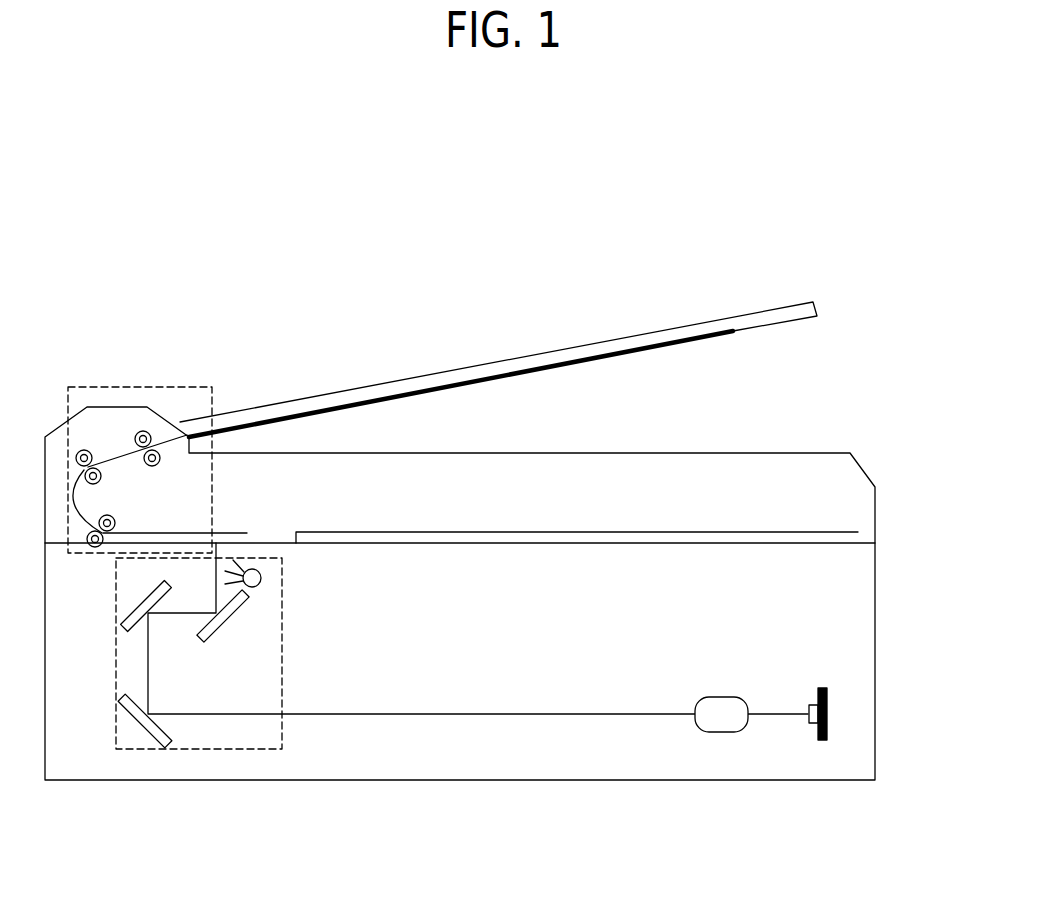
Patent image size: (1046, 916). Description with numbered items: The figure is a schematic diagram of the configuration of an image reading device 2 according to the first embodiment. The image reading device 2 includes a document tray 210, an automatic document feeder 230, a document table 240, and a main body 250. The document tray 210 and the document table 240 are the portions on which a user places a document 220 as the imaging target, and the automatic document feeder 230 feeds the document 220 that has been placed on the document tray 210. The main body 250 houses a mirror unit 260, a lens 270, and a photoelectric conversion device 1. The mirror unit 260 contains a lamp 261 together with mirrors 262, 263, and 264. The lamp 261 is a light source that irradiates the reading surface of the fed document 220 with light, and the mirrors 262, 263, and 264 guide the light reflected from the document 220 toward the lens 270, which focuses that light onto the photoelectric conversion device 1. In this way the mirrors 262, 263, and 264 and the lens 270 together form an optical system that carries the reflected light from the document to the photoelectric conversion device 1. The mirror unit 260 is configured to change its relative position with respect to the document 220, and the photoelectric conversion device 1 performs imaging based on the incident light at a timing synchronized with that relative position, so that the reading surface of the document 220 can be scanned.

The photoelectric conversion device 1 is at (822, 687).
The image reading device 2 is at (90, 199).
The document tray 210 is at (787, 302).
The document 220 is at (476, 380).
The automatic document feeder 230 is at (137, 387).
The document table 240 is at (632, 532).
The main body 250 is at (875, 578).
The mirror unit 260 is at (283, 745).
The lamp 261 is at (261, 577).
The mirror 262 is at (238, 612).
The mirror 263 is at (140, 597).
The mirror 264 is at (140, 730).
The lens 270 is at (718, 697).